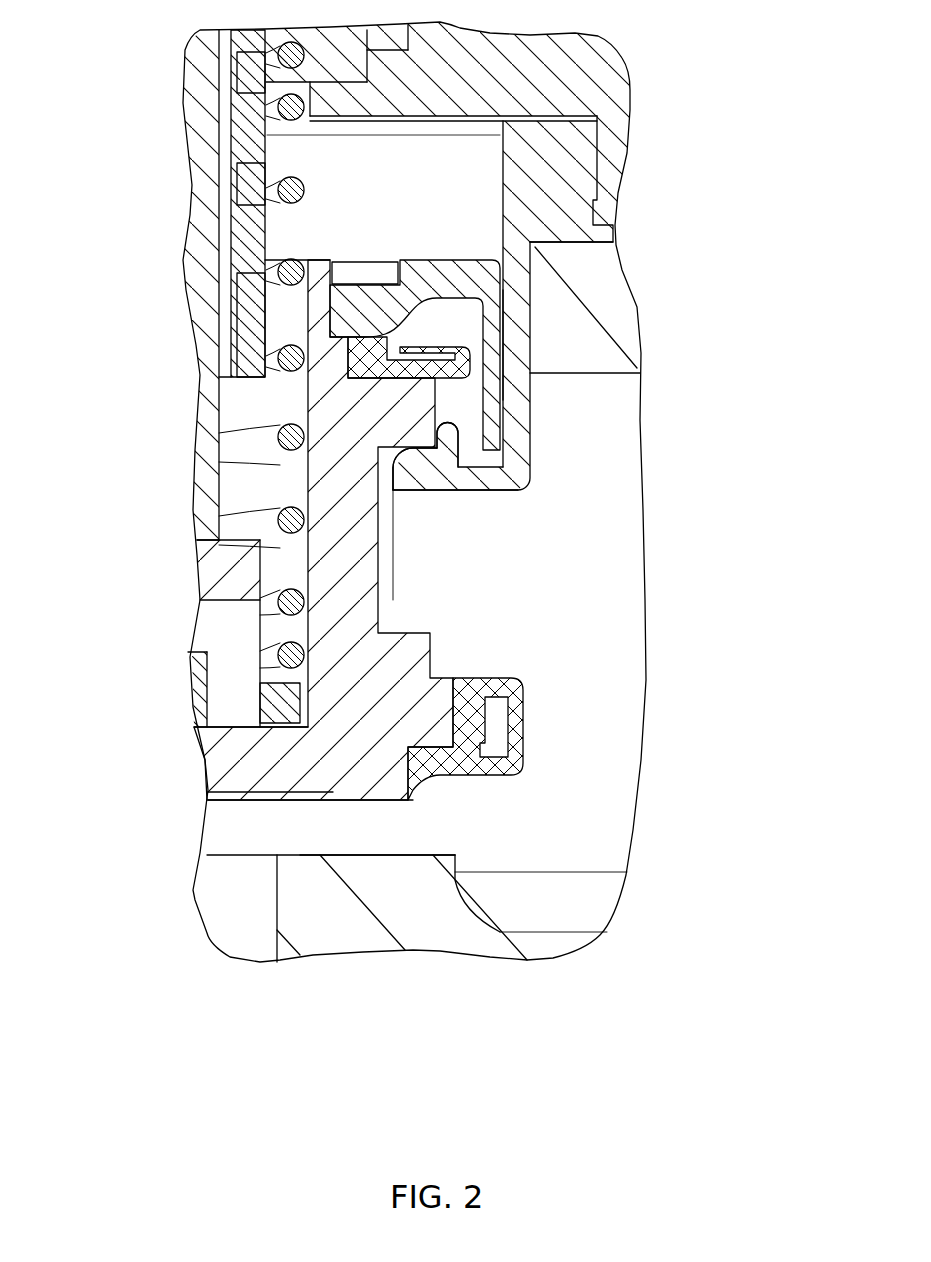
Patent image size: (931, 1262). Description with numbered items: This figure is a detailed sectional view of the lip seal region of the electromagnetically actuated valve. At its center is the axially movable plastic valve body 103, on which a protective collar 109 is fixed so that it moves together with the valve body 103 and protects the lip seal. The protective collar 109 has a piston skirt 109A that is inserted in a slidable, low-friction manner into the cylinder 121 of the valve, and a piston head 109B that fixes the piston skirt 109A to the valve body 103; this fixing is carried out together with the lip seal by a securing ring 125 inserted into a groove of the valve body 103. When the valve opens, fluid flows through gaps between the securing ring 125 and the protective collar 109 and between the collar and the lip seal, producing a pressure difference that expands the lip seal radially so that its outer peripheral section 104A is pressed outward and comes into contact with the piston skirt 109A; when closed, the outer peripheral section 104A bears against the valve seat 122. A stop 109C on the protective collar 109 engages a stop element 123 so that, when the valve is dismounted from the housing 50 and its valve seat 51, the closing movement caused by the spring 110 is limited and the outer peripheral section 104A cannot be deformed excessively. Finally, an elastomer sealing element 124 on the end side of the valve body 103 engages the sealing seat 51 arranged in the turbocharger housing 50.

The housing 50 is at (417, 953).
The valve seat 51 is at (426, 953).
The valve body 103 is at (252, 530).
The outer peripheral section 104A is at (567, 388).
The protective collar 109 is at (581, 356).
The piston skirt 109A is at (644, 345).
The piston head 109B is at (558, 294).
The stop 109C is at (610, 486).
The spring 110 is at (181, 355).
The cylinder 121 is at (638, 261).
The valve seat 122 is at (586, 550).
The stop element 123 is at (586, 639).
The sealing element 124 is at (594, 779).
The securing ring 125 is at (226, 211).